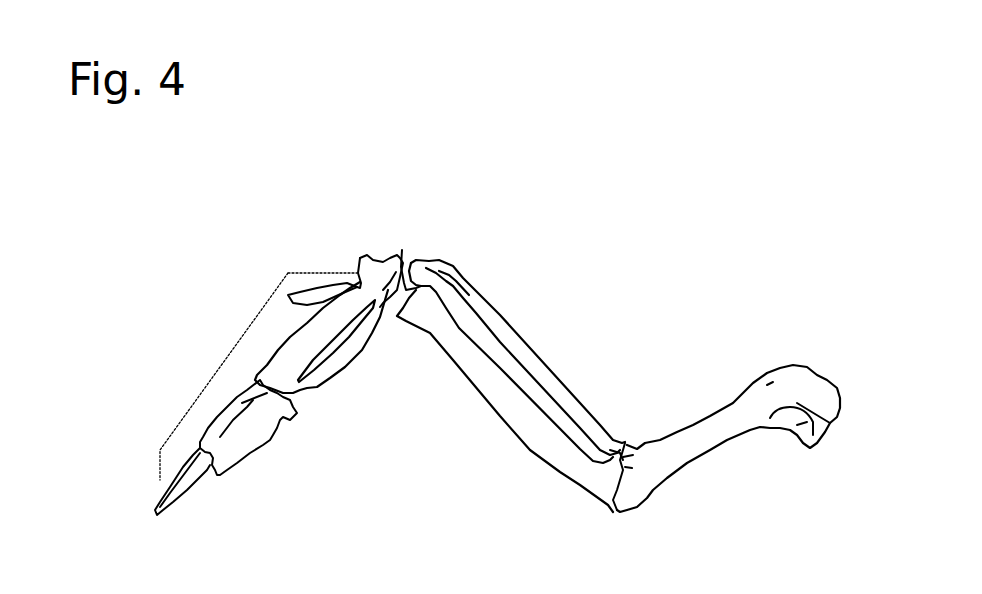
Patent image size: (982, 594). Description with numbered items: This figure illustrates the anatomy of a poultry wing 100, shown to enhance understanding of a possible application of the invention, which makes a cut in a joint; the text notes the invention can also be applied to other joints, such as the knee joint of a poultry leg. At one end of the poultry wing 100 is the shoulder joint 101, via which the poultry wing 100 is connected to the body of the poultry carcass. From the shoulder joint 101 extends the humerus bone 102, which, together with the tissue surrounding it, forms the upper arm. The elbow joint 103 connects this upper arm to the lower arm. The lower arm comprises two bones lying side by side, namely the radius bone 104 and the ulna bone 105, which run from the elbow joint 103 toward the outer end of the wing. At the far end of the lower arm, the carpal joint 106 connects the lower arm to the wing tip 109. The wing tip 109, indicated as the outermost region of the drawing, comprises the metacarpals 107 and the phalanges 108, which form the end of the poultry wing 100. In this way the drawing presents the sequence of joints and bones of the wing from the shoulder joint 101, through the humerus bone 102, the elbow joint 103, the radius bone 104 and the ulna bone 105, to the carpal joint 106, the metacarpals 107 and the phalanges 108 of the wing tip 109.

The poultry wing 100 is at (535, 231).
The shoulder joint 101 is at (830, 397).
The humerus bone 102 is at (713, 415).
The elbow joint 103 is at (625, 443).
The radius bone 104 is at (538, 360).
The ulna bone 105 is at (480, 367).
The carpal joint 106 is at (395, 308).
The metacarpals 107 is at (330, 393).
The phalanges 108 is at (185, 487).
The wing tip 109 is at (208, 393).